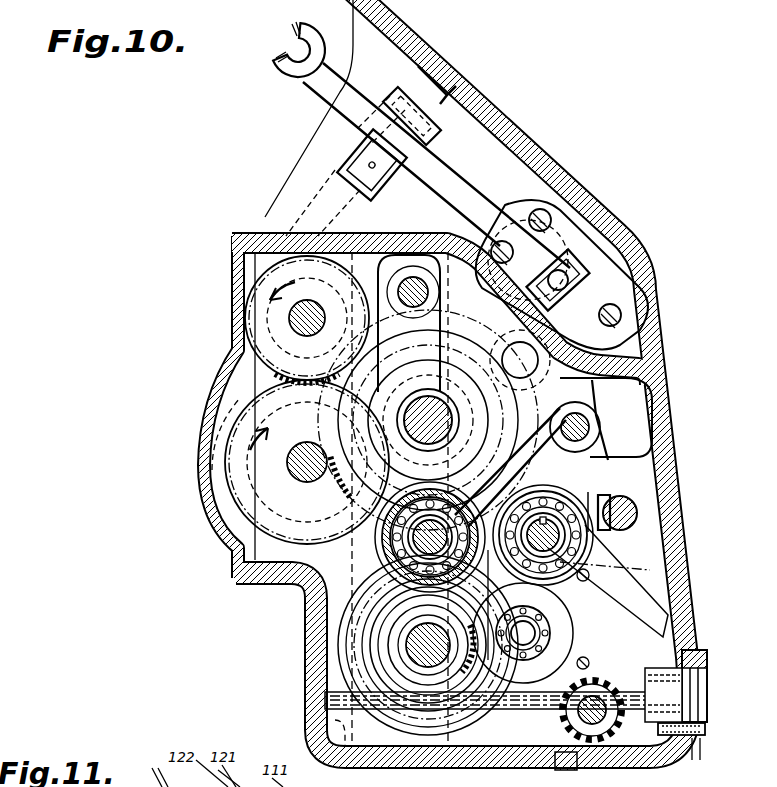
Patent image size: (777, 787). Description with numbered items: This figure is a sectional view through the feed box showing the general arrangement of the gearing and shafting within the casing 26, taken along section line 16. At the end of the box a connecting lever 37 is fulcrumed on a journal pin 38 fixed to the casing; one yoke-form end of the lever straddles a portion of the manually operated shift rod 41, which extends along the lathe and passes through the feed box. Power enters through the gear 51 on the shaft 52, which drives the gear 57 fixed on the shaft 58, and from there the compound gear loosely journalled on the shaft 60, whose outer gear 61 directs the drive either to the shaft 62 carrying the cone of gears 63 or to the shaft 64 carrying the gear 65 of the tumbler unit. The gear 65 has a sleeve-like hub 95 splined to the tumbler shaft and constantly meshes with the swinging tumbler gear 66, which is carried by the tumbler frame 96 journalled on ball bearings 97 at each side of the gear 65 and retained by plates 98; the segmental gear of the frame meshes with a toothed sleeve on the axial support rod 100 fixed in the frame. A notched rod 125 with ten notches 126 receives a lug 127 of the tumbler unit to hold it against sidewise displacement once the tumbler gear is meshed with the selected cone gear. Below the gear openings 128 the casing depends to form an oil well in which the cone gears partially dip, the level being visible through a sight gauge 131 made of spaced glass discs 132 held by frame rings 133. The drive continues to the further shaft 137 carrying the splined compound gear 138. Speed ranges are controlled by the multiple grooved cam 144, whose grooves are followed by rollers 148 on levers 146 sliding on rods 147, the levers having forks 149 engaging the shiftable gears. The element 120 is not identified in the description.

The section line 16- 16 is at (415, 270).
The gear casing 26 is at (662, 345).
The connecting lever 37 is at (330, 85).
The journal pin 38 is at (425, 90).
The manually operated shift rod 41 is at (548, 258).
The gear 51 is at (292, 327).
The shaft 52 is at (297, 318).
The gear 57 is at (278, 390).
The shaft 58 is at (307, 442).
The shaft 60 is at (400, 538).
The outer gear of the compound gear 61 is at (382, 528).
The shaft 62 is at (440, 660).
The cone of gears 63 is at (362, 648).
The shaft 64 is at (590, 540).
The gear 65 is at (598, 496).
The swinging tumbler gear 66 is at (575, 585).
The sleeve-like hub 95 is at (589, 576).
The tumbler frame 96 is at (520, 690).
The ball bearings 97 is at (600, 548).
The plates 98 is at (552, 600).
The axial support rod 100 is at (586, 715).
The shaft 120 is at (412, 748).
The notched rod 125 is at (640, 504).
The notches 126 is at (640, 522).
The lug 127 is at (622, 520).
The gear openings 128 is at (232, 548).
The sight gauge 131 is at (700, 730).
The glass discs 132 is at (700, 692).
The frame rings 133 is at (695, 755).
The further shaft 137 is at (435, 400).
The compound gear 138 is at (307, 480).
The multiple grooved cam 144 is at (536, 360).
The lever 146 is at (497, 246).
The rods 147 is at (405, 291).
The rollers 148 is at (428, 420).
The forks 149 is at (610, 452).